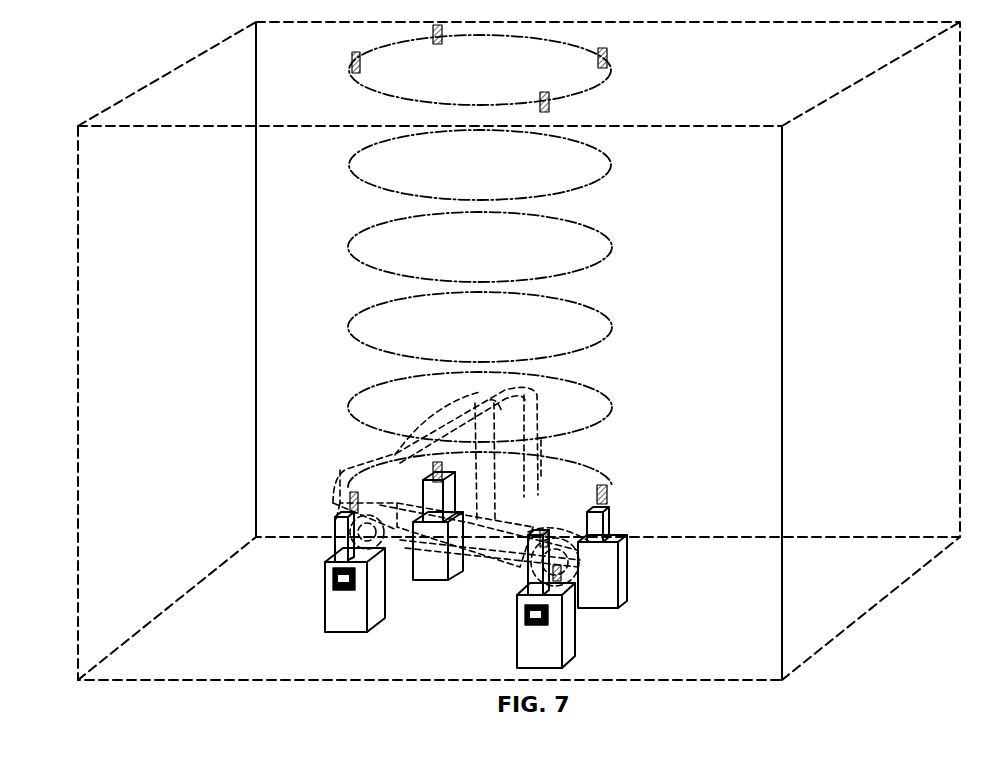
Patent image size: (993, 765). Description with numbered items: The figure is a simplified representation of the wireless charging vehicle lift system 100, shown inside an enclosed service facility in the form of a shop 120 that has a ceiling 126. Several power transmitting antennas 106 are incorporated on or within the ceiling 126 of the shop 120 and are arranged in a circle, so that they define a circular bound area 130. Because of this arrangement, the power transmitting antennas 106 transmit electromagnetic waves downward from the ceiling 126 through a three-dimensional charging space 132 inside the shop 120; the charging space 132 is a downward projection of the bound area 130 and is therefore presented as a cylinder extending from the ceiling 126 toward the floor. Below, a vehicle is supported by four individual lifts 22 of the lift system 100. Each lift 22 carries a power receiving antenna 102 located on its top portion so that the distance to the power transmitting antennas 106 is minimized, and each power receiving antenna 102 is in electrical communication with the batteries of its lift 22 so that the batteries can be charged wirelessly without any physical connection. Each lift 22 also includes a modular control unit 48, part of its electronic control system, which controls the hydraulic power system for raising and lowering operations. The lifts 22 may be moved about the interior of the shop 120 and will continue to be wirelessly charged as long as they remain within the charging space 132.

The shop 120 is at (492, 351).
The ceiling 126 is at (160, 85).
The power transmitting antennas 106 is at (352, 58).
The bound area 130 is at (497, 108).
The charging space 132 is at (559, 260).
The wireless charging vehicle lift system 100 is at (348, 380).
The power receiving antennas 102 is at (432, 470).
The lift 22 is at (322, 615).
The modular control unit 48 is at (333, 580).